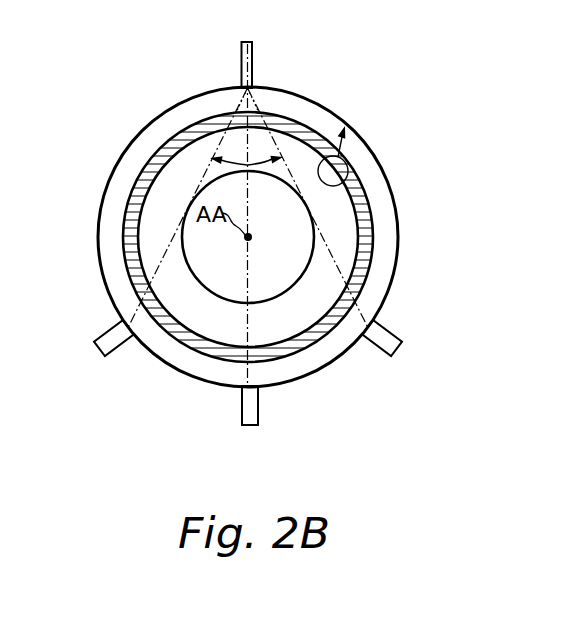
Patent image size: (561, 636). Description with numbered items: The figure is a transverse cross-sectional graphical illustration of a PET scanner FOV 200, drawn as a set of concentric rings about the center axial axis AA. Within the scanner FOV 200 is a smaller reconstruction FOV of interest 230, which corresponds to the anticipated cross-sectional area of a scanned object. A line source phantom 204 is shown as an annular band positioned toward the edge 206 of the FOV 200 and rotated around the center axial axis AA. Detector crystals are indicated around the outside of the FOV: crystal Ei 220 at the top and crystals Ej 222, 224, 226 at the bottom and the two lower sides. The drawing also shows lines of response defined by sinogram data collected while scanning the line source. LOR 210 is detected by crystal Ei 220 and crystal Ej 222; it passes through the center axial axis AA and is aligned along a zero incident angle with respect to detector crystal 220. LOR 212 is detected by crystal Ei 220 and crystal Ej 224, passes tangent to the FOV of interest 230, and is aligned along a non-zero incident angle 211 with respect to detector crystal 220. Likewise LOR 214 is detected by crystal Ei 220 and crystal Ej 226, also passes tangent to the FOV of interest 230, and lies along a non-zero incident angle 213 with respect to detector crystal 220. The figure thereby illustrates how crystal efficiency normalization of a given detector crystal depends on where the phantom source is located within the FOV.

The PET scanner FOV 200 is at (166, 110).
The line source phantom 204 is at (150, 162).
The edge of the FOV 206 is at (346, 183).
The LOR 210 is at (255, 328).
The non-zero incident angle 211 is at (240, 158).
The LOR 212 is at (170, 243).
The non-zero incident angle 213 is at (258, 157).
The LOR 214 is at (334, 258).
The crystal Ei 220 is at (241, 46).
The crystal Ej 222 is at (242, 404).
The crystal Ej 224 is at (105, 334).
The crystal Ej 226 is at (389, 333).
The reconstruction FOV of interest 230 is at (202, 258).